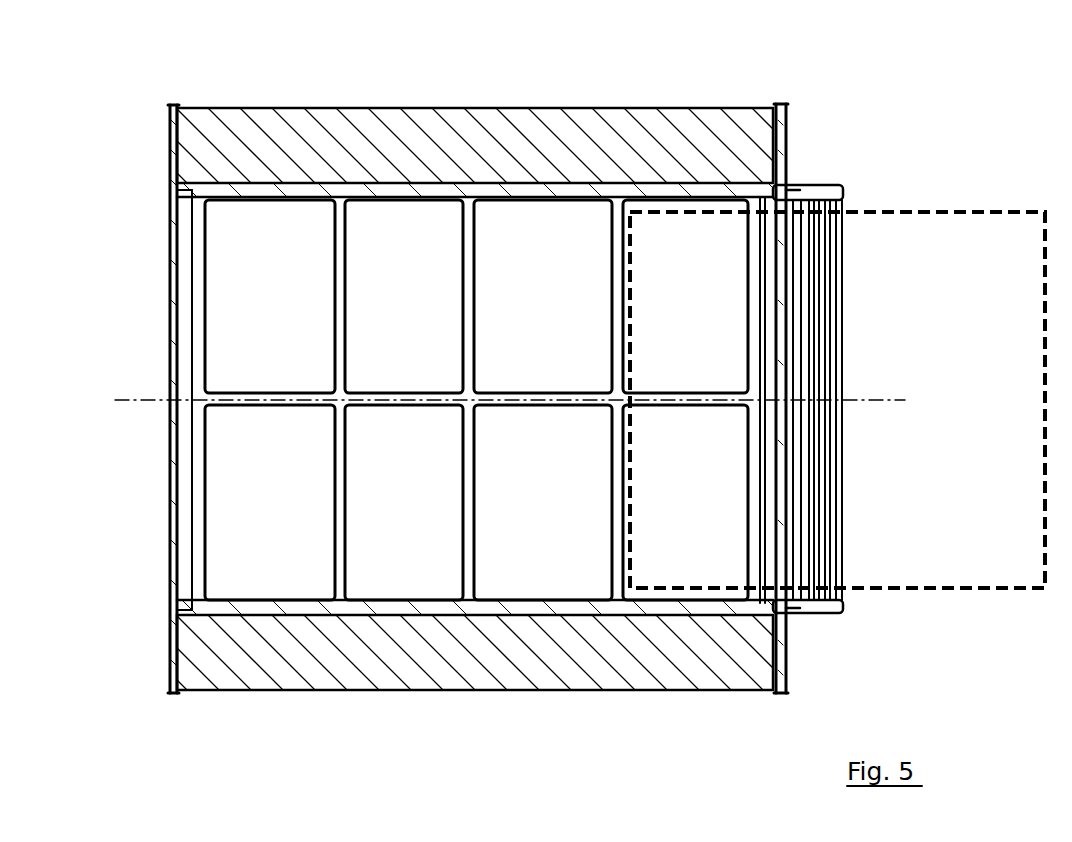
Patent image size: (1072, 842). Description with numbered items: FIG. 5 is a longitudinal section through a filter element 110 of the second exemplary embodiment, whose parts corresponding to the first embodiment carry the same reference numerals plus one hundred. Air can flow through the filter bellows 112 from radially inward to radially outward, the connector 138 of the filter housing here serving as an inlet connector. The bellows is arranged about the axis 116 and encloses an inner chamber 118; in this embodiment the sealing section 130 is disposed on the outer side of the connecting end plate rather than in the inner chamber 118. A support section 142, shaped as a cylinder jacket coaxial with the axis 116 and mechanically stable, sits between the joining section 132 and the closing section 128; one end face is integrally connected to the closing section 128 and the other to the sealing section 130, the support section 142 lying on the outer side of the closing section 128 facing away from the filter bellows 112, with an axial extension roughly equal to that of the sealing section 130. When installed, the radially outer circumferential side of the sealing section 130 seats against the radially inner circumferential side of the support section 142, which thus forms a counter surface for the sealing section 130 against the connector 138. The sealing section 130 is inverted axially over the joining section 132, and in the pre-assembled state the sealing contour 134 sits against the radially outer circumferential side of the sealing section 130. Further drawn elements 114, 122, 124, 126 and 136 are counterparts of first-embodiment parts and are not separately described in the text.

The filter element 110 is at (138, 72).
The filter bellows 112 is at (268, 99).
The lower housing wall 114 is at (258, 655).
The axis 116 is at (140, 397).
The inner chamber 118 is at (262, 350).
The inner liner 122 is at (180, 612).
The end plate 124 is at (768, 478).
The lower liner layer 126 is at (435, 612).
The closing section 128 is at (788, 97).
The sealing section 130 is at (830, 318).
The joining section 132 is at (840, 200).
The sealing contour 134 is at (820, 497).
The spacer plates 136 is at (776, 288).
The connector 138 is at (927, 590).
The support section 142 is at (797, 197).